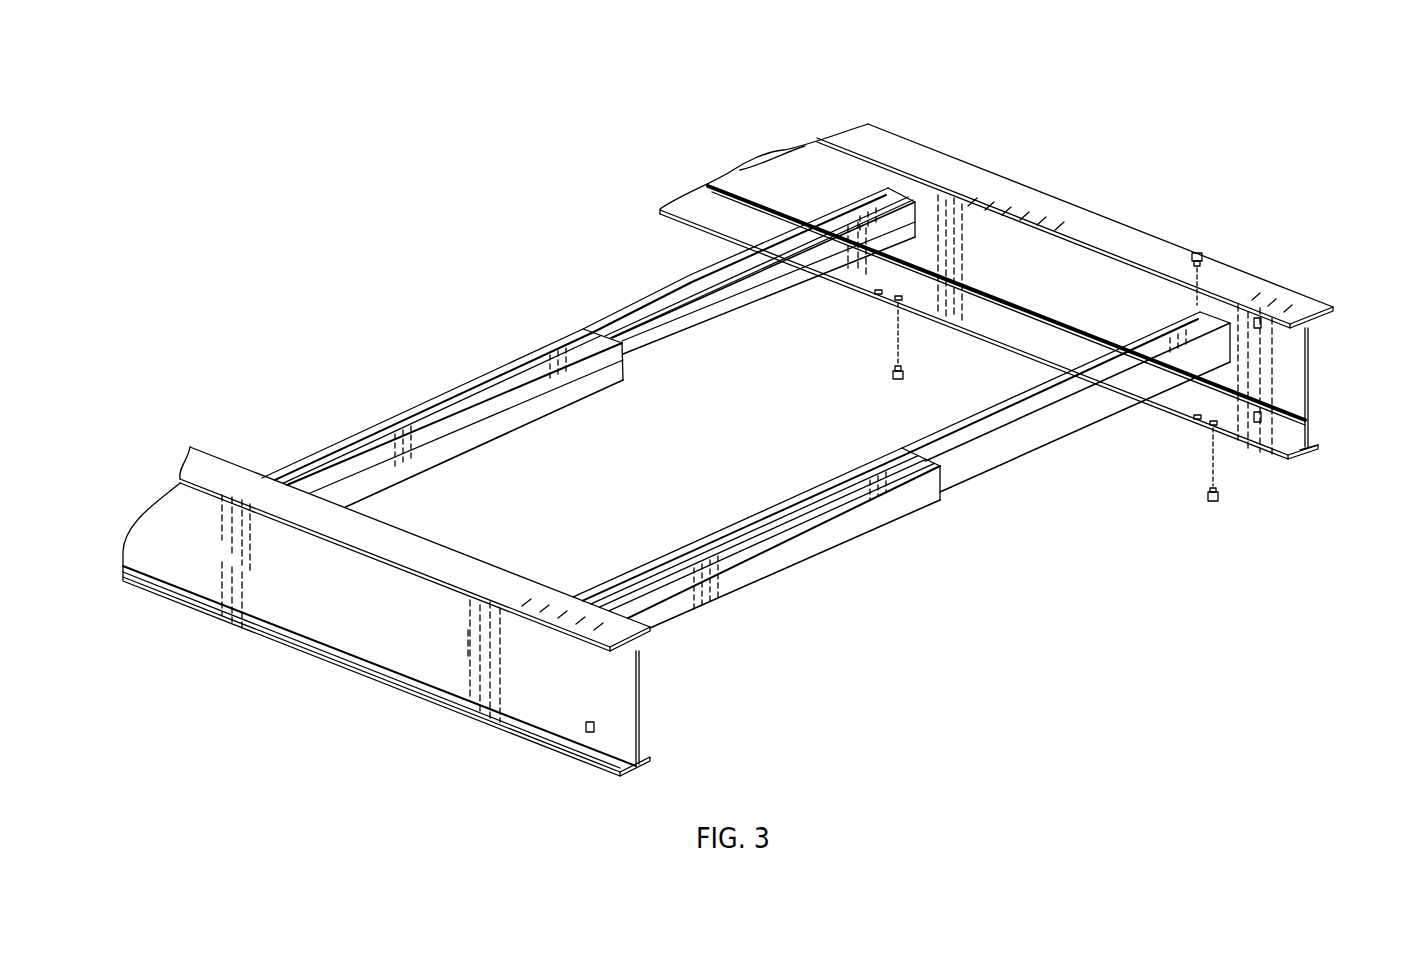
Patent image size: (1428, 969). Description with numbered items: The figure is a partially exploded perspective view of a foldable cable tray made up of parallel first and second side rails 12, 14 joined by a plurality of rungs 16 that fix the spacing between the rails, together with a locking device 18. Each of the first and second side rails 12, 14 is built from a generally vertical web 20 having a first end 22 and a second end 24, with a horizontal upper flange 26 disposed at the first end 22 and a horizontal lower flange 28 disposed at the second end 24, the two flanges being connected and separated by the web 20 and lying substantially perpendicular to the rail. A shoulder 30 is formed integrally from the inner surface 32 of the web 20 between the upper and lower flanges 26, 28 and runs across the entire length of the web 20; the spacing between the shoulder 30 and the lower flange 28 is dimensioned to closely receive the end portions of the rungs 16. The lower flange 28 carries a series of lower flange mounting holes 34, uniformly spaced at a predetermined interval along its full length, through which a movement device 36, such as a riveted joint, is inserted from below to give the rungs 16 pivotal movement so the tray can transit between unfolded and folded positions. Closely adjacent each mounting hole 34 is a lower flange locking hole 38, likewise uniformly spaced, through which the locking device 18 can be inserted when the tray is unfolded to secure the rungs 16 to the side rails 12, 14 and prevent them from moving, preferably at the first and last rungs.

The first side rail 12 is at (1026, 306).
The second side rail 14 is at (378, 640).
The rungs 16 is at (465, 420).
The locking device 18 is at (1200, 252).
The web 20 is at (1310, 372).
The first end 22 is at (1307, 322).
The second end 24 is at (1318, 442).
The upper flange 26 is at (1262, 290).
The lower flange 28 is at (1303, 459).
The shoulder 30 is at (1232, 393).
The inner surface 32 is at (785, 170).
The lower flange mounting holes 34 is at (1213, 425).
The movement device 36 is at (900, 385).
The lower flange locking holes 38 is at (1197, 419).